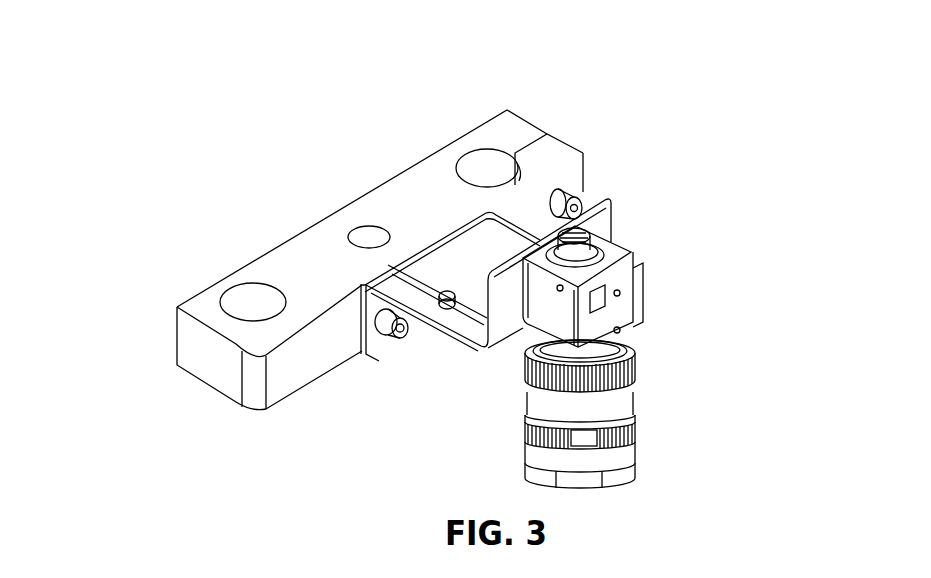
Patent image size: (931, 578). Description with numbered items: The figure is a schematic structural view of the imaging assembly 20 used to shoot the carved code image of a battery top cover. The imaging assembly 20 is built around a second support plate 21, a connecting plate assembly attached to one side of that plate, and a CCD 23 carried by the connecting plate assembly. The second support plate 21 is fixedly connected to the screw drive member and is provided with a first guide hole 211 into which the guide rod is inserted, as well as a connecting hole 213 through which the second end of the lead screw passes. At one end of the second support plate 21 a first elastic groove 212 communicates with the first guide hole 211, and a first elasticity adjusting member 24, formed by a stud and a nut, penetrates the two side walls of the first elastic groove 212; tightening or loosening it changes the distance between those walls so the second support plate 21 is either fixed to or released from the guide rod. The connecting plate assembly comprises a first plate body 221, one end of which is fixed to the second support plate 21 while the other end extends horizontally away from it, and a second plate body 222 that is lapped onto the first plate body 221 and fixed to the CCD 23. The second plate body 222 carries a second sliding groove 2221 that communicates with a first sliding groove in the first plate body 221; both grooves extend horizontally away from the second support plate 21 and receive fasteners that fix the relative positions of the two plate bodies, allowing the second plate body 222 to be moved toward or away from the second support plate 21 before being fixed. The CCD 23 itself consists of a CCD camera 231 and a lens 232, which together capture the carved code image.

The imaging assembly 20 is at (246, 63).
The second support plate 21 is at (212, 311).
The first guide hole 211 is at (481, 155).
The first elastic groove 212 is at (544, 130).
The connecting hole 213 is at (358, 212).
The first plate body 221 is at (408, 316).
The second sliding groove 2221 is at (398, 273).
The second plate body 222 is at (470, 258).
The first elasticity adjusting member 24 is at (580, 197).
The CCD 23 is at (788, 279).
The CCD camera 231 is at (622, 313).
The lens 232 is at (643, 443).